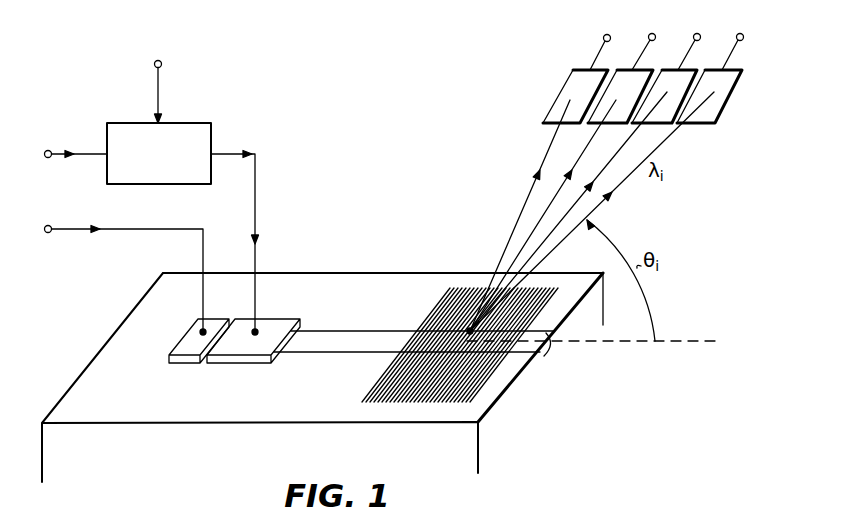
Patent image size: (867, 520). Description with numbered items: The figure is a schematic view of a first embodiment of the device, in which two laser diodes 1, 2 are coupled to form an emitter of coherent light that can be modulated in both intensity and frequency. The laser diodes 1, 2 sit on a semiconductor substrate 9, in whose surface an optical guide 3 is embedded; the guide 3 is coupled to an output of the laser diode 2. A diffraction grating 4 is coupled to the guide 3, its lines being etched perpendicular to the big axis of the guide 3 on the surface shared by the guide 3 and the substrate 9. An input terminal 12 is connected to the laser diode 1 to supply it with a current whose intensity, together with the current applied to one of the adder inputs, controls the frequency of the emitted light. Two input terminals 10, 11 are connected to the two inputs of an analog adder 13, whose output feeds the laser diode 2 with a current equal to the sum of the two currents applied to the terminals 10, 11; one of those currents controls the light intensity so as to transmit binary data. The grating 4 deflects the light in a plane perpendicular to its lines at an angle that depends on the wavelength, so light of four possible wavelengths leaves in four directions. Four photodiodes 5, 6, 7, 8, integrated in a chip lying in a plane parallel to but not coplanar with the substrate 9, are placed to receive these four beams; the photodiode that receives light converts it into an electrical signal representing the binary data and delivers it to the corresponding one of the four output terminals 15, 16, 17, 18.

The laser diode 1 is at (188, 350).
The laser diode 2 is at (240, 350).
The optical guide 3 is at (548, 355).
The diffraction grating 4 is at (446, 302).
The photodiode 5 is at (562, 87).
The photodiode 6 is at (614, 78).
The photodiode 7 is at (670, 78).
The photodiode 8 is at (725, 92).
The semiconductor substrate 9 is at (500, 408).
The input terminal 10 is at (162, 62).
The input terminal 11 is at (48, 150).
The input terminal 12 is at (48, 233).
The analog adder 13 is at (135, 124).
The output terminal 15 is at (604, 35).
The output terminal 16 is at (651, 34).
The output terminal 17 is at (700, 34).
The output terminal 18 is at (742, 34).